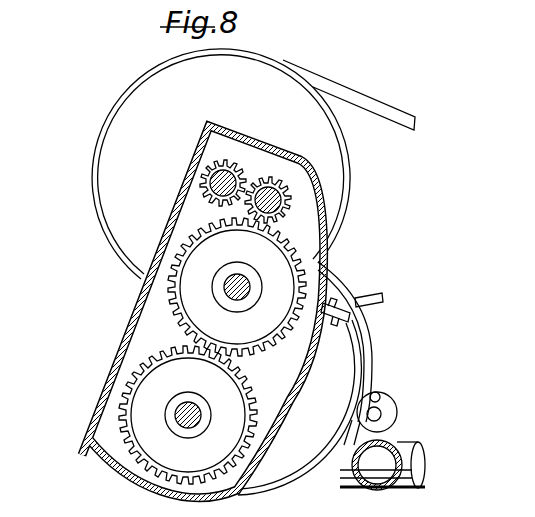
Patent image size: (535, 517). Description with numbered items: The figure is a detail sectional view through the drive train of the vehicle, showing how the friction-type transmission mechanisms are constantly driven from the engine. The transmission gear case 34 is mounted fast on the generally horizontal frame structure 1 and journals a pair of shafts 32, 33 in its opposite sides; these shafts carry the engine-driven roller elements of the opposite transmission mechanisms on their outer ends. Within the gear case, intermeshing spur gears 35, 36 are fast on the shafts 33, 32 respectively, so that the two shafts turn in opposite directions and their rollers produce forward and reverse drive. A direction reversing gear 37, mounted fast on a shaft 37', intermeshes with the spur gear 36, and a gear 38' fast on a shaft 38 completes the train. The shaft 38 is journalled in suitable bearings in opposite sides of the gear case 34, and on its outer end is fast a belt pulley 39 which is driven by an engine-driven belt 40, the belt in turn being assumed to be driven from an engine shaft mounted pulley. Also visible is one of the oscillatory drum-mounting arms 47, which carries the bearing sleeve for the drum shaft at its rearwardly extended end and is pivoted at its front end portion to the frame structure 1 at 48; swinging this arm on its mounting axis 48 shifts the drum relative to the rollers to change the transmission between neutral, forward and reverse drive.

The frame structure 1 is at (418, 463).
The shaft 32 is at (248, 284).
The shaft 33 is at (173, 412).
The transmission gear case 34 is at (137, 332).
The spur gear 35 is at (163, 448).
The spur gear 36 is at (278, 298).
The direction reversing gear 37 is at (318, 200).
The shaft 37' is at (326, 188).
The shaft 38 is at (189, 183).
The gear 38' is at (189, 173).
The belt pulley 39 is at (213, 92).
The engine-driven belt 40 is at (362, 101).
The oscillatory arm 47 is at (381, 395).
The pivot 48 is at (383, 412).